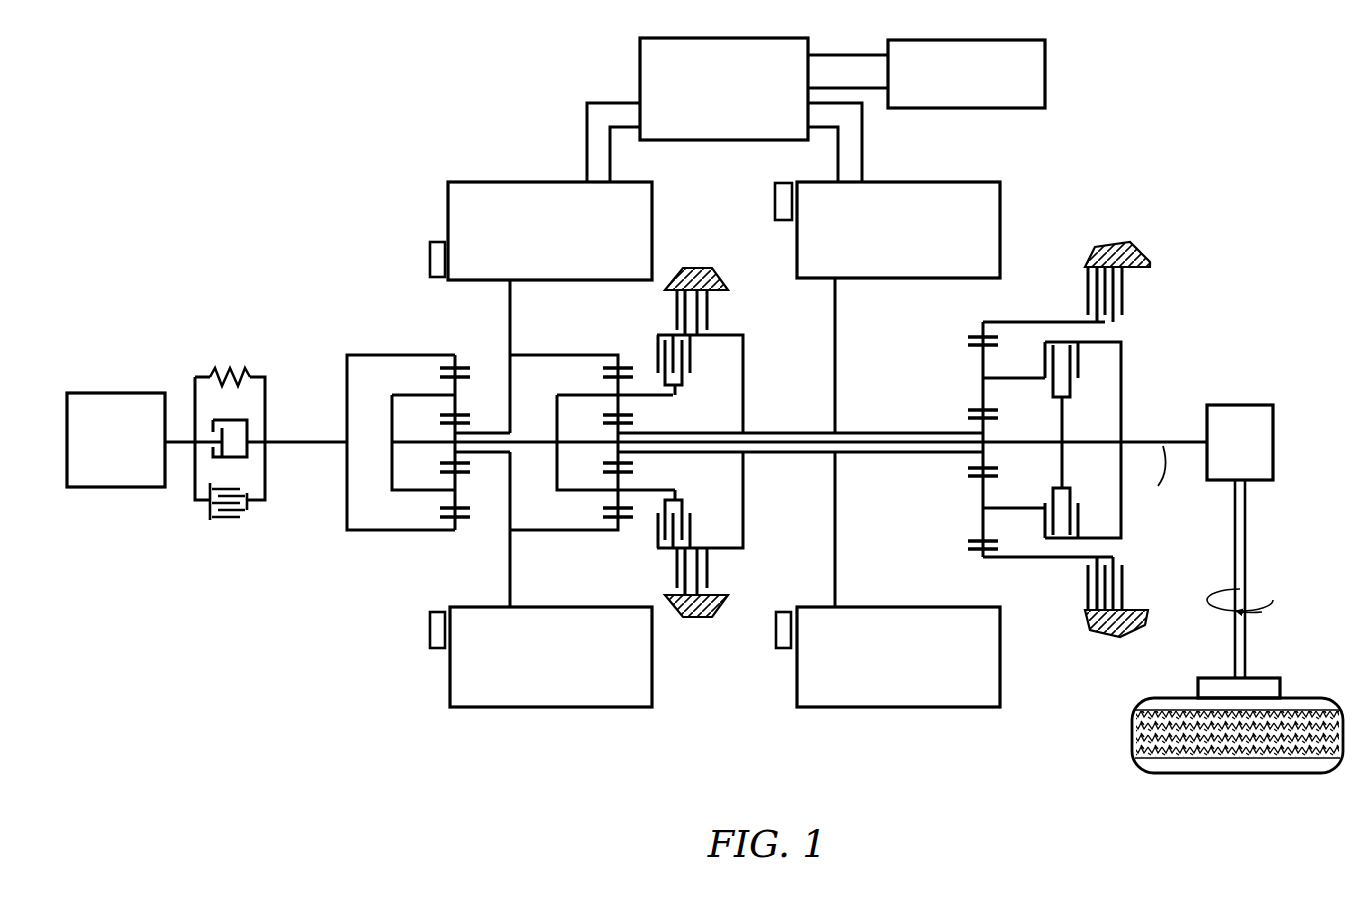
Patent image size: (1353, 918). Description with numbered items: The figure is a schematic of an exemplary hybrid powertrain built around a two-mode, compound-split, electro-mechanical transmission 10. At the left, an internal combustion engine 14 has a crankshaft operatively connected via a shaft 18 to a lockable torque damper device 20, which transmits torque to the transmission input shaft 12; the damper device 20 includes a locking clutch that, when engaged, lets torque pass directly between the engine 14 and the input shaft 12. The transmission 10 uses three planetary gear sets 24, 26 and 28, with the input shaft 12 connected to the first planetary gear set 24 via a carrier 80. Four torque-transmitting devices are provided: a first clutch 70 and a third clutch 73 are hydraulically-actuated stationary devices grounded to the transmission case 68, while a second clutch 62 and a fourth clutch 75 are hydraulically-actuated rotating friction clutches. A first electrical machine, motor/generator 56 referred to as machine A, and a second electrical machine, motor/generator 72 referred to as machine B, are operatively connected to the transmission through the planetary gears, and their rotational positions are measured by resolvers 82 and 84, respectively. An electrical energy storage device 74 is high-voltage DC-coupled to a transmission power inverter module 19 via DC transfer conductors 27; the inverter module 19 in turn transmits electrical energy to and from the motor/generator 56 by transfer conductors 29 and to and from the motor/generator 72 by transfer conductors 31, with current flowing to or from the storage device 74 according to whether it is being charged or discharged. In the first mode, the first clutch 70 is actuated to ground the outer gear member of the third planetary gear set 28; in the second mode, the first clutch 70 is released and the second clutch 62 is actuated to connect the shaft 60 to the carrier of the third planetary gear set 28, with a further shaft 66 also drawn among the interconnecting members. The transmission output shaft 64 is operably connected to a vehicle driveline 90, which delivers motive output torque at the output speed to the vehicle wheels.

The transmission 10 is at (406, 140).
The input shaft 12 is at (330, 440).
The engine 14 is at (120, 392).
The shaft 18 is at (185, 440).
The transmission power inverter module 19 is at (639, 52).
The lockable torque damper device 20 is at (193, 492).
The first planetary gear set 24 is at (442, 348).
The second planetary gear set 26 is at (612, 348).
The DC transfer conductors 27 is at (847, 54).
The third planetary gear set 28 is at (973, 322).
The transfer conductors 29 is at (586, 140).
The transfer conductors 31 is at (863, 135).
The motor/generator 56 is at (447, 214).
The shaft 60 is at (810, 440).
The clutch C2 62 is at (1087, 379).
The transmission output shaft 64 is at (1183, 440).
The shaft 66 is at (780, 431).
The transmission case 68 is at (692, 267).
The clutch C1 70 is at (1077, 286).
The motor/generator 72 is at (1003, 198).
The clutch C3 73 is at (715, 312).
The electrical energy storage device 74 is at (1048, 62).
The clutch C4 75 is at (695, 369).
The carrier 80 is at (347, 490).
The resolver 82 is at (427, 258).
The resolver 84 is at (772, 201).
The vehicle driveline 90 is at (1228, 568).